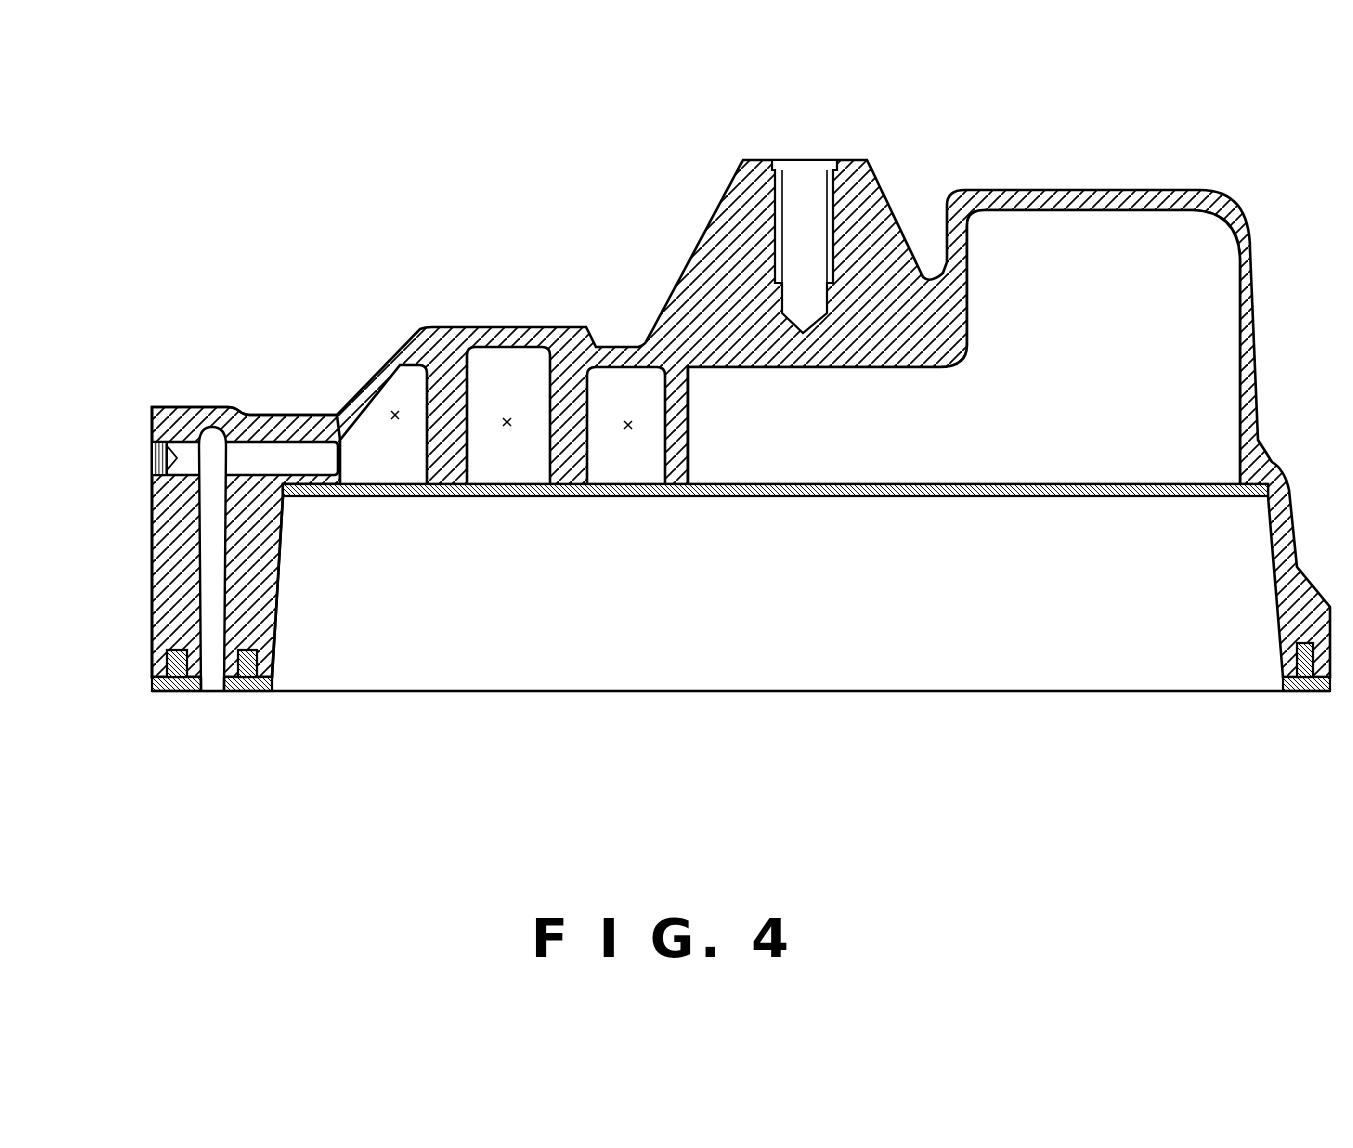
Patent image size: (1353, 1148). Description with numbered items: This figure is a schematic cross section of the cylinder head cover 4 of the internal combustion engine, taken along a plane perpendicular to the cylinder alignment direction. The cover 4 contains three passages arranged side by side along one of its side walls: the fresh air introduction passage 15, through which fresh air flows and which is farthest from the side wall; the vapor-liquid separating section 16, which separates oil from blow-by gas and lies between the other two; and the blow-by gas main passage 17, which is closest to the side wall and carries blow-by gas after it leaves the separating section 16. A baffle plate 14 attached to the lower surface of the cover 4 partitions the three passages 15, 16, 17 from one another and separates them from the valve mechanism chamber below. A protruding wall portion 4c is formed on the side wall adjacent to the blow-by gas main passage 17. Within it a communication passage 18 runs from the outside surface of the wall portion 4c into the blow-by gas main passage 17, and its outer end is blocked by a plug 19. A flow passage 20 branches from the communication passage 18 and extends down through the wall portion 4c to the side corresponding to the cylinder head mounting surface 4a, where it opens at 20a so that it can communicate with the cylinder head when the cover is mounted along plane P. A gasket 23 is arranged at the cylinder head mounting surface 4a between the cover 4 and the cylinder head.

The cylinder head cover 4 is at (1117, 178).
The cylinder head mounting surface 4a is at (847, 711).
The protruding wall portion 4c is at (168, 540).
The baffle plate 14 is at (1138, 483).
The fresh air introduction passage 15 is at (628, 420).
The vapor-liquid separating section 16 is at (507, 417).
The blow-by gas main passage 17 is at (394, 410).
The communication passage 18 is at (274, 458).
The plug 19 is at (158, 461).
The flow passage 20 is at (213, 580).
The passage opening 20a is at (212, 693).
The gasket 23 is at (172, 663).
The parting plane P is at (173, 693).